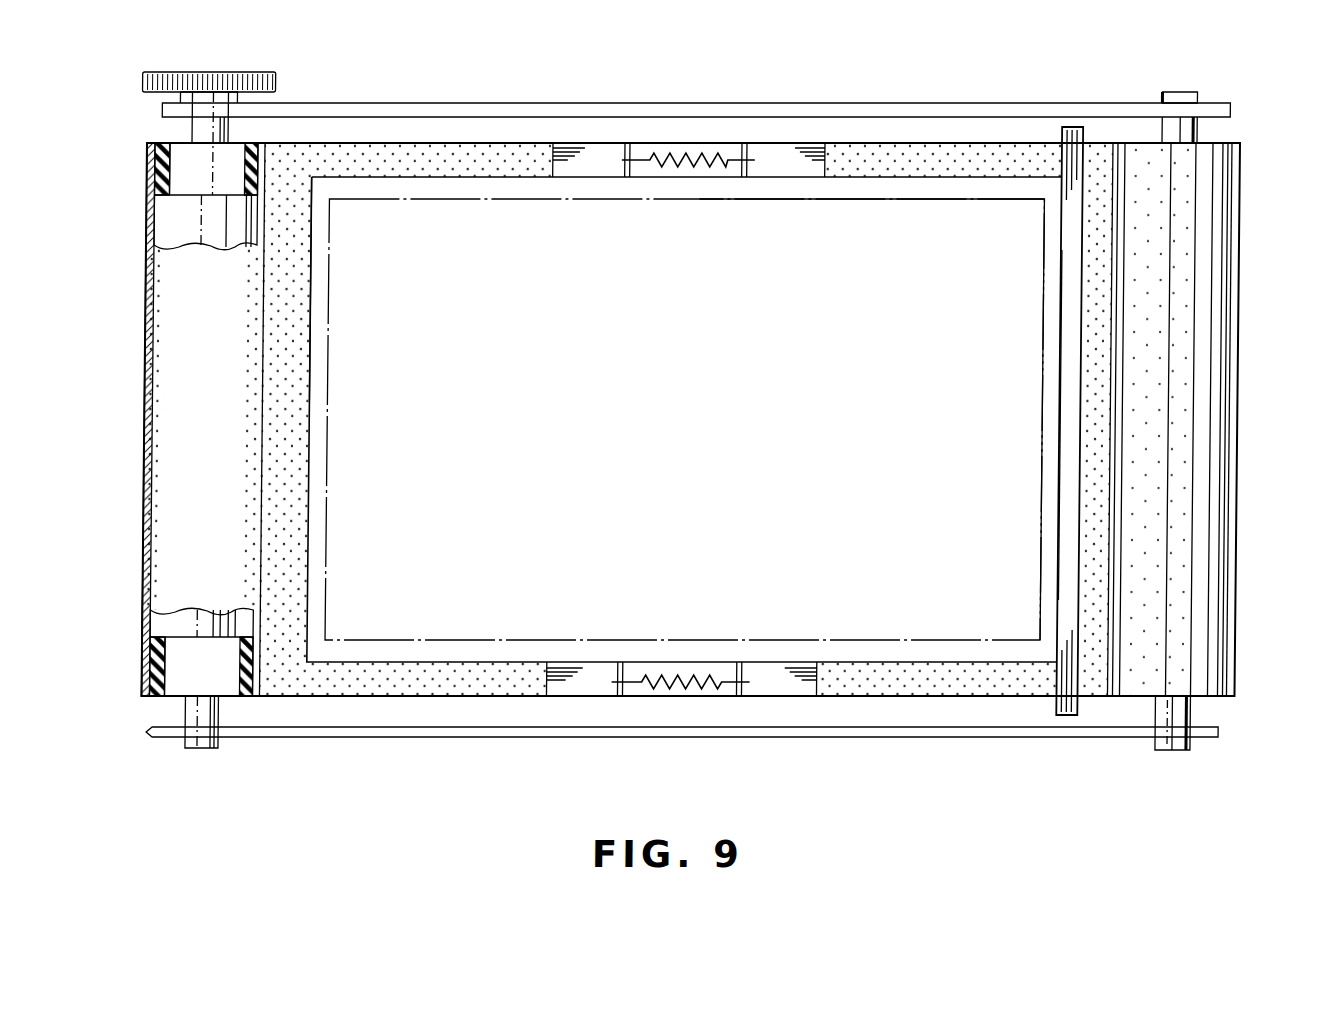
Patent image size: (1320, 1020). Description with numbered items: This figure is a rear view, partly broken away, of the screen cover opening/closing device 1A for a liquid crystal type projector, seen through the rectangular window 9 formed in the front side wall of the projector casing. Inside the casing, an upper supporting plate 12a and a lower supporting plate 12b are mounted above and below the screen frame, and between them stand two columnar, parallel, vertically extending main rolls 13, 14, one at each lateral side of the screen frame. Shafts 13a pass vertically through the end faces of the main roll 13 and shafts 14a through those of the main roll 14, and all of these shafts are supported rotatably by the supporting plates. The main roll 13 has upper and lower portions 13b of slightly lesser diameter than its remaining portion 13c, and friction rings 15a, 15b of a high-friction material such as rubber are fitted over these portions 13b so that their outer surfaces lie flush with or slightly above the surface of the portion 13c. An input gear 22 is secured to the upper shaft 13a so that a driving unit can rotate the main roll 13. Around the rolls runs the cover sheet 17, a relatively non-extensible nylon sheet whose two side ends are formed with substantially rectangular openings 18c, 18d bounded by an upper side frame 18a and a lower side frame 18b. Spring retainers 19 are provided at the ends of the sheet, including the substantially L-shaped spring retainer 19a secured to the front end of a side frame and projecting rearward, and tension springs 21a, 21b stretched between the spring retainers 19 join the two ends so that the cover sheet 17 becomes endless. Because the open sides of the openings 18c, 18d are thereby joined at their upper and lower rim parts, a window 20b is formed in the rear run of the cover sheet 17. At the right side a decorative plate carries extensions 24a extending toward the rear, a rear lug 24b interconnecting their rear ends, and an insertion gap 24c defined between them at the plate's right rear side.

The screen cover opening/closing device 1A is at (1068, 82).
The rectangular window 9 is at (855, 202).
The upper supporting plate 12a is at (443, 103).
The lower supporting plate 12b is at (447, 737).
The main roll 13 is at (157, 210).
The shaft 13a is at (190, 125).
The lesser-diameter portion of main roll 13b is at (185, 162).
The remaining portion of main roll 13c is at (160, 622).
The main roll 14 is at (1179, 92).
The shaft 14a is at (1198, 100).
The friction ring 15a is at (145, 672).
The friction ring 15b is at (148, 172).
The cover sheet 17 is at (1294, 393).
The upper side frame 18a is at (470, 168).
The lower side frame 18b is at (853, 670).
The rectangular opening 18c is at (1061, 568).
The rectangular opening 18d is at (318, 548).
The spring retainer 19 is at (577, 162).
The spring retainer 19a is at (624, 167).
The window 20b is at (382, 182).
The tension spring 21a is at (695, 165).
The tension spring 21b is at (670, 685).
The input gear 22 is at (234, 72).
The extension 24a is at (1062, 128).
The rear lug 24b is at (1063, 365).
The insertion gap 24c is at (1089, 155).